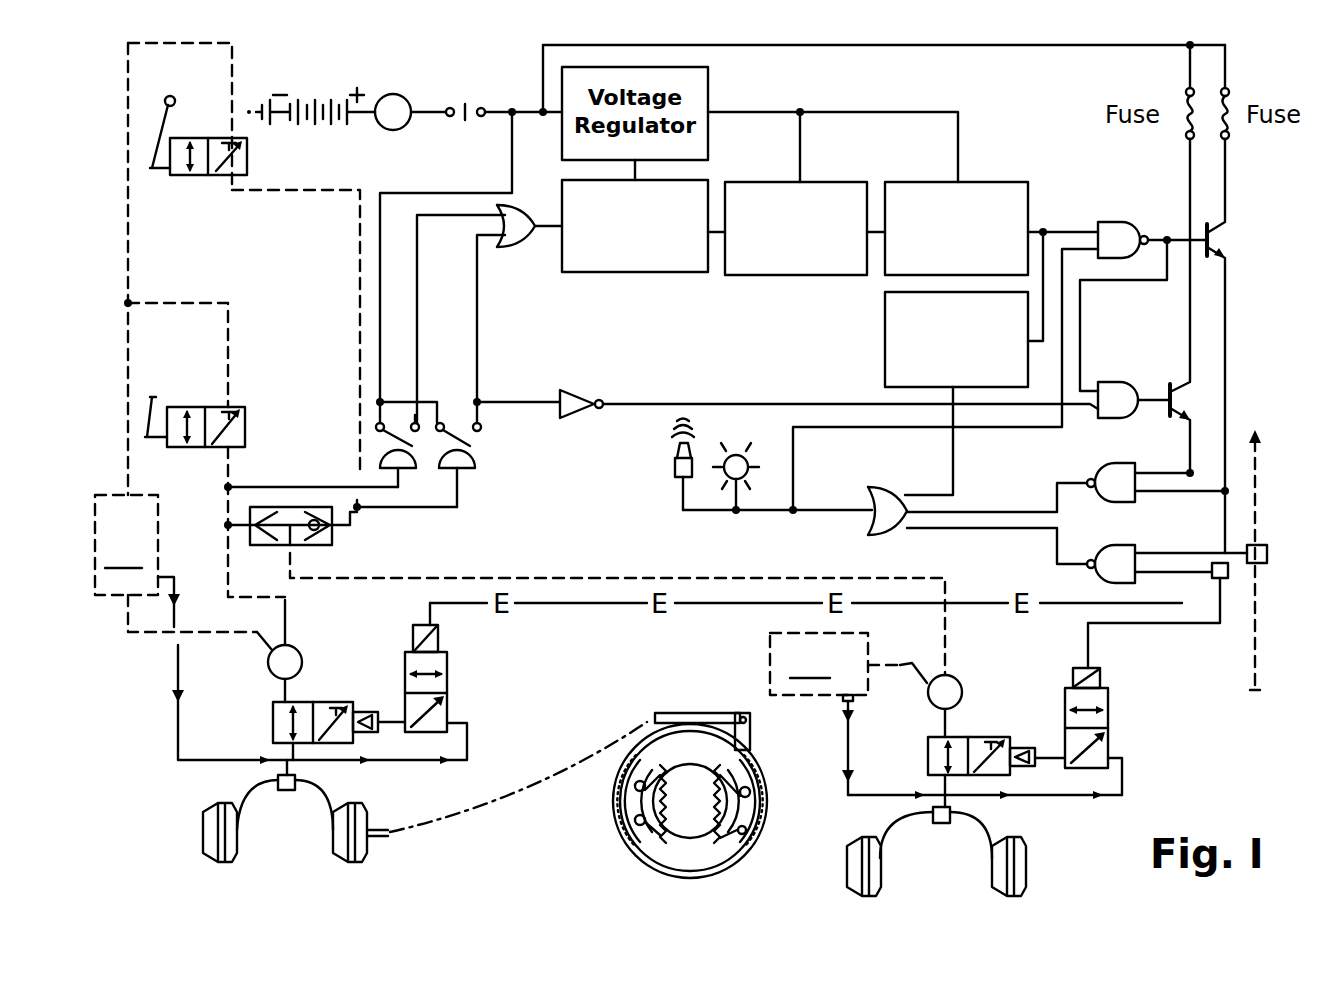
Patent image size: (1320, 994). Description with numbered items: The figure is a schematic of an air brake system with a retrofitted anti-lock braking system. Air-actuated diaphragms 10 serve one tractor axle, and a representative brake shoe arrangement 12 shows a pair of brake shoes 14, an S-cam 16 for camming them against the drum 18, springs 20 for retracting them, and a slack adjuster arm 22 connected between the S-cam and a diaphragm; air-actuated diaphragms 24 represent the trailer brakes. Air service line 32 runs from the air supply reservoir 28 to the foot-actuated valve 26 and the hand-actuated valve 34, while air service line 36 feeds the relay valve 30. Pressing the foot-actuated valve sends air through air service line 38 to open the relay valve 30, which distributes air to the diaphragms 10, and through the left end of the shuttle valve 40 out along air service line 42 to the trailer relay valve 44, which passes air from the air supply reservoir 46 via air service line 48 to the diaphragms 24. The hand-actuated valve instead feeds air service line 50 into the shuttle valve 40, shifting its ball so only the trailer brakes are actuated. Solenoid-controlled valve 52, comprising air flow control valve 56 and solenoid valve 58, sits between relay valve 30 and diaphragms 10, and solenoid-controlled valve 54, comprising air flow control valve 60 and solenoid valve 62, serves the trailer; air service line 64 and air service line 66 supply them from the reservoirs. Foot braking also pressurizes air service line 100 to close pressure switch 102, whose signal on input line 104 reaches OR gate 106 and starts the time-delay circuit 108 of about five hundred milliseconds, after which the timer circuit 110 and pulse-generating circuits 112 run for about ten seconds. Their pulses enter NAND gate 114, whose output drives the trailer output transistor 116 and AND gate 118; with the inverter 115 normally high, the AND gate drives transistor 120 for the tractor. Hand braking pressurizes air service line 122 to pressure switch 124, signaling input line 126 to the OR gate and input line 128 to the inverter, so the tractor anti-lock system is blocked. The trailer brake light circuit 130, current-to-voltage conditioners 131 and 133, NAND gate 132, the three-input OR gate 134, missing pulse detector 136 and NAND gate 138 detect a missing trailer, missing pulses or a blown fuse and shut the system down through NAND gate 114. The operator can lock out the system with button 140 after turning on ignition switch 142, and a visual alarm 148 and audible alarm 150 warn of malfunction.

The air-actuated diaphragms 10 is at (203, 850).
The brake shoe arrangement 12 is at (686, 809).
The brake shoes 14 is at (615, 780).
The S-cam 16 is at (753, 800).
The drum 18 is at (677, 872).
The springs 20 is at (713, 872).
The slack adjuster arm 22 is at (750, 727).
The air-actuated diaphragms 24 is at (880, 883).
The foot-actuated valve 26 is at (188, 405).
The air supply reservoir 28 is at (126, 545).
The relay valve 30 is at (298, 647).
The air service line 32 is at (236, 73).
The hand-actuated valve 34 is at (247, 157).
The air service line 36 is at (122, 622).
The air service line 38 is at (226, 483).
The shuttle valve 40 is at (330, 532).
The air service line 42 is at (295, 555).
The relay valve 44 is at (953, 677).
The air supply reservoir 46 is at (819, 664).
The air service line 48 is at (905, 660).
The air service line 50 is at (312, 188).
The solenoid-controlled valve 52 is at (388, 690).
The solenoid-controlled valve 54 is at (1052, 728).
The air flow control valve 56 is at (340, 703).
The solenoid valve 58 is at (452, 667).
The air flow control valve 60 is at (993, 737).
The solenoid valve 62 is at (1118, 701).
The air service line 64 is at (180, 613).
The air service line 66 is at (850, 745).
The air service line 100 is at (268, 483).
The pressure switch 102 is at (372, 447).
The input line 104 is at (417, 284).
The OR gate 106 is at (512, 247).
The time-delay circuit 108 is at (637, 273).
The timer circuit 110 is at (740, 276).
The pulse-generating circuits 112 is at (883, 275).
The NAND gate 114 is at (1115, 222).
The inverter 115 is at (580, 385).
The trailer output transistor 116 is at (1229, 240).
The AND gate 118 is at (1120, 380).
The transistor 120 is at (1168, 397).
The air service line 122 is at (438, 508).
The pressure switch 124 is at (478, 462).
The input line 126 is at (477, 340).
The input line 128 is at (495, 400).
The trailer brake light circuit 130 is at (1250, 662).
The current-to-voltage conditioner 131 is at (1248, 552).
The NAND gate 132 is at (1117, 545).
The current-to-voltage conditioner 133 is at (1212, 578).
The three-input OR gate 134 is at (882, 537).
The missing pulse detector 136 is at (883, 338).
The NAND gate 138 is at (1110, 463).
The button 140 is at (485, 116).
The ignition switch 142 is at (393, 94).
The visual alarm 148 is at (736, 455).
The audible alarm 150 is at (675, 468).